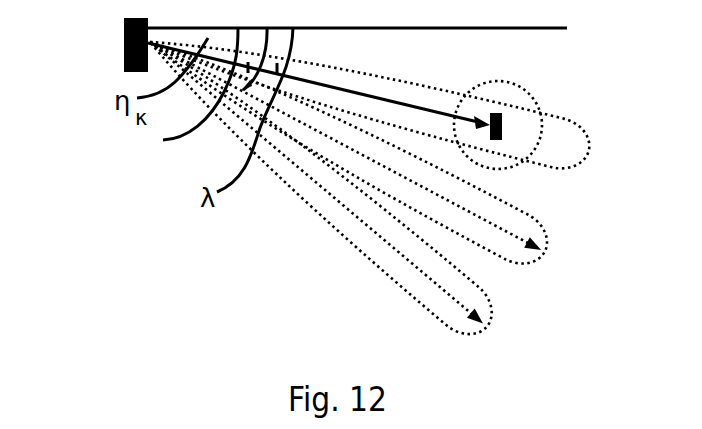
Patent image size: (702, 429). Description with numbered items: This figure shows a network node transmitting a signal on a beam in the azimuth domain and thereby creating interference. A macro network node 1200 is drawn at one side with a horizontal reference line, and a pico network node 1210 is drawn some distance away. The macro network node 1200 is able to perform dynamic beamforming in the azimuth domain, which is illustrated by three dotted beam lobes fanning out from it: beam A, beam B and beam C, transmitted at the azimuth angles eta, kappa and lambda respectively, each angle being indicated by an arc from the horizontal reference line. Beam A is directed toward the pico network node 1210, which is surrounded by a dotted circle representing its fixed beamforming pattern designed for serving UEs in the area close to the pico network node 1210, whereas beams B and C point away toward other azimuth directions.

The macro network node 1200 is at (124, 43).
The pico network node 1210 is at (502, 113).
The beam A is at (369, 96).
The beam B is at (347, 147).
The beam C is at (318, 184).